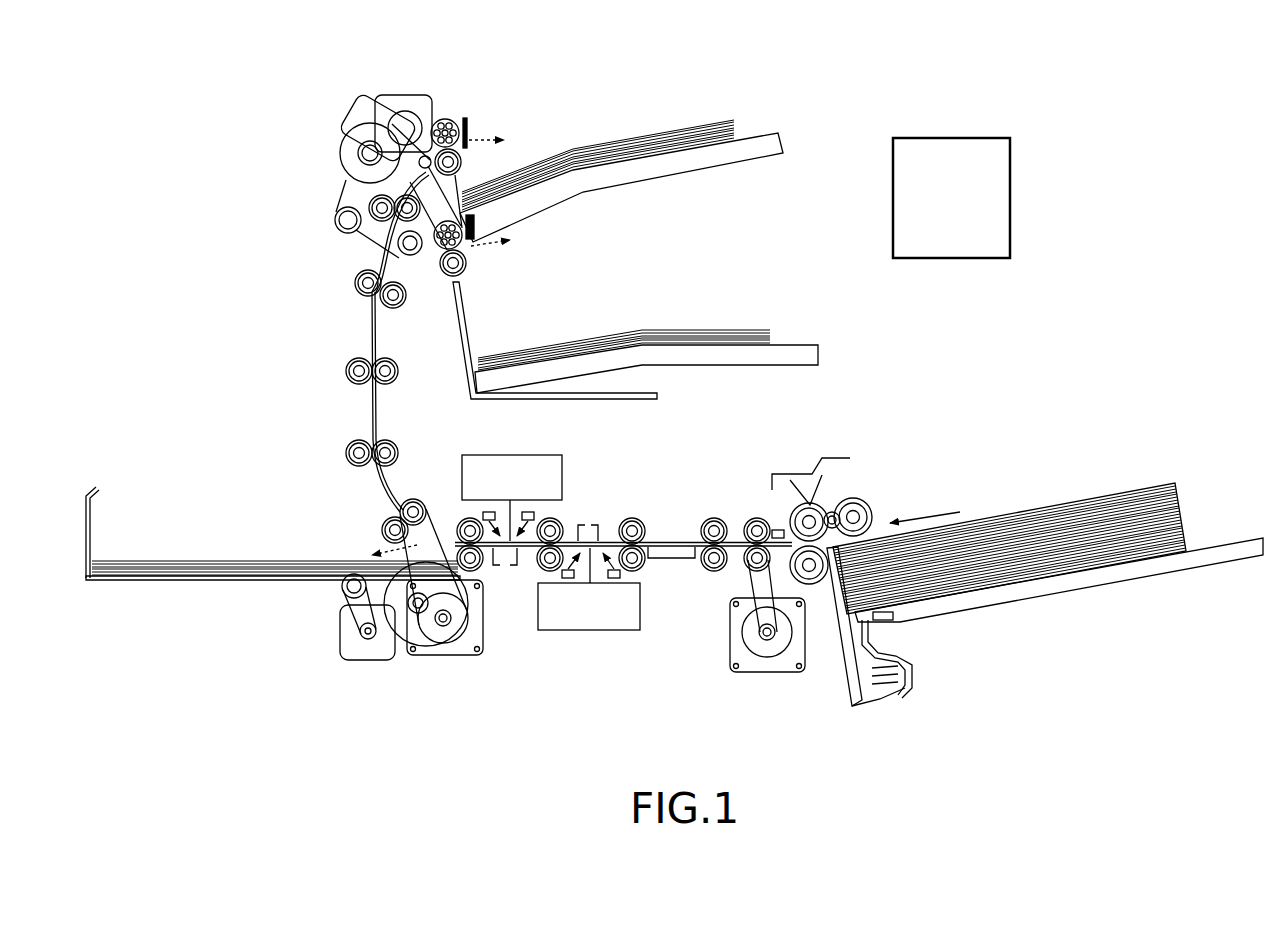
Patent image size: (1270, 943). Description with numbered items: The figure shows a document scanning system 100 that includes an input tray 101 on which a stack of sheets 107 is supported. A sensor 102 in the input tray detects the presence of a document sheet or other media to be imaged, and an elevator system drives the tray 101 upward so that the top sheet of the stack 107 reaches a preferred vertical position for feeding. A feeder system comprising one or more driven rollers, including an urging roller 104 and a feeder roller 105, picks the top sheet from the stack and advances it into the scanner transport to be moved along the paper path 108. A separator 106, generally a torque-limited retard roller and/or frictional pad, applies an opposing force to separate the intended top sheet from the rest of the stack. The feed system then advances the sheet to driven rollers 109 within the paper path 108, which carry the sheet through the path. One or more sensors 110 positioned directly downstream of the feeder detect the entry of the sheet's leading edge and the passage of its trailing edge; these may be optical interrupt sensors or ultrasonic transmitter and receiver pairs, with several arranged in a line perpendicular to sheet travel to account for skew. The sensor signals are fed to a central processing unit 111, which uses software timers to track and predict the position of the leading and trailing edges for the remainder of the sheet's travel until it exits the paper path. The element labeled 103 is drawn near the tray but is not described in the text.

The document scanning system 100 is at (236, 106).
The input tray 101 is at (1213, 560).
The sensor 102 is at (891, 620).
The tray bracket 103 is at (898, 700).
The urging roller 104 is at (872, 510).
The feeder roller 105 is at (838, 502).
The separator 106 is at (808, 590).
The stack of sheets 107 is at (1165, 512).
The paper path 108 is at (608, 494).
The driven rollers 109 is at (346, 285).
The sensors 110 is at (772, 530).
The central processing unit 111 is at (935, 225).